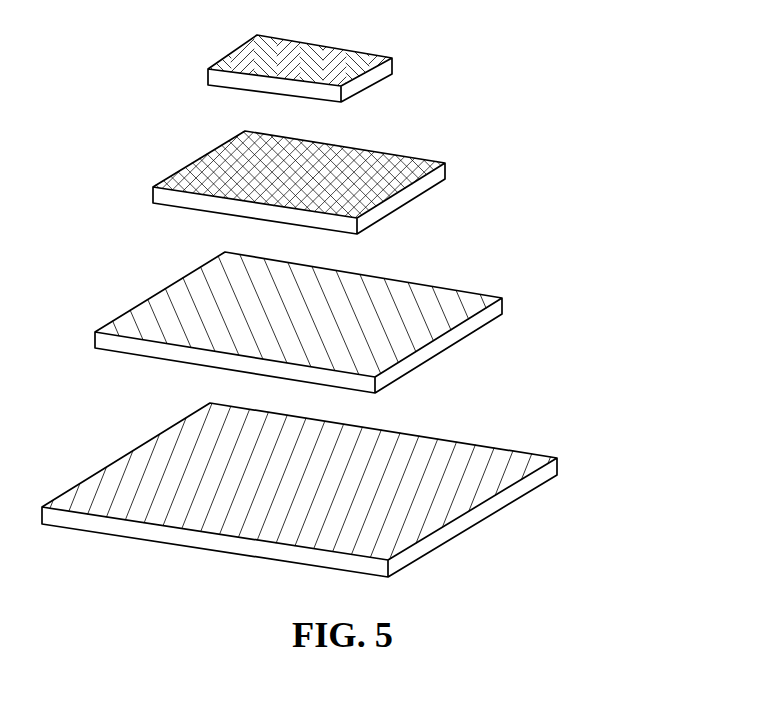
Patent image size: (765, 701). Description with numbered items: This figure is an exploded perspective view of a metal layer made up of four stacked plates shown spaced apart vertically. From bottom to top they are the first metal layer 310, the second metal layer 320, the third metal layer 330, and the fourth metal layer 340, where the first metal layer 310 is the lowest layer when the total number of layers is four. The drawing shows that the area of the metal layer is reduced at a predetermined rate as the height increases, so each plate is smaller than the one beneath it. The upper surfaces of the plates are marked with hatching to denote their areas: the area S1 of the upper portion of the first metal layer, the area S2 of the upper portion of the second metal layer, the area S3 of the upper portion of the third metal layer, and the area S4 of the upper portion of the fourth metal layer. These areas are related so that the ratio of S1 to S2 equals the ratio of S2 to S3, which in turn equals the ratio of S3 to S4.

The n–3-th metal layer 310 is at (345, 490).
The n–2-th metal layer 320 is at (344, 322).
The n–1-th metal layer 330 is at (344, 175).
The n-th metal layer 340 is at (344, 56).
The area of upper portion of first metal layer S1 is at (517, 455).
The area of upper portion of second metal layer S2 is at (465, 295).
The area of upper portion of third metal layer S3 is at (408, 160).
The area of upper portion of fourth metal layer S4 is at (353, 57).